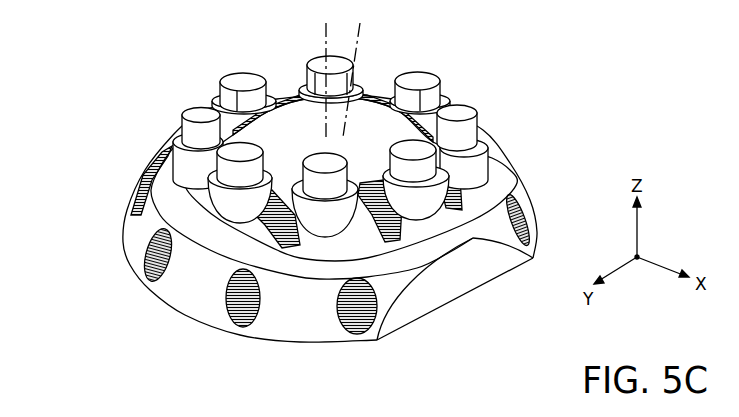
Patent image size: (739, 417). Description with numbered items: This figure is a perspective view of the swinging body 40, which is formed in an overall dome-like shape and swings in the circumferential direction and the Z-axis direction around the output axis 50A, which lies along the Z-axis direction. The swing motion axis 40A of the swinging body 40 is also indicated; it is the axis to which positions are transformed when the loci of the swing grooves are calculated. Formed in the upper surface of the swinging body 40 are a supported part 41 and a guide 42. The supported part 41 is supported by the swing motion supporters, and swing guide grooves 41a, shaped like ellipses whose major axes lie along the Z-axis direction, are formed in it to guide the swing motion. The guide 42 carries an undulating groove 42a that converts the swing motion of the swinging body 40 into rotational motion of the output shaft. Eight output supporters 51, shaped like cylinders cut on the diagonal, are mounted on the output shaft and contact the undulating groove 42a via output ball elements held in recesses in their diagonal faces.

The swinging body 40 is at (107, 123).
The swing motion axis 40A is at (357, 38).
The output axis 50A is at (326, 45).
The output supporter 51 is at (478, 119).
The supported part 41 is at (517, 172).
The swing guide groove 41a is at (527, 215).
The guide 42 is at (237, 232).
The undulating groove 42a is at (277, 228).